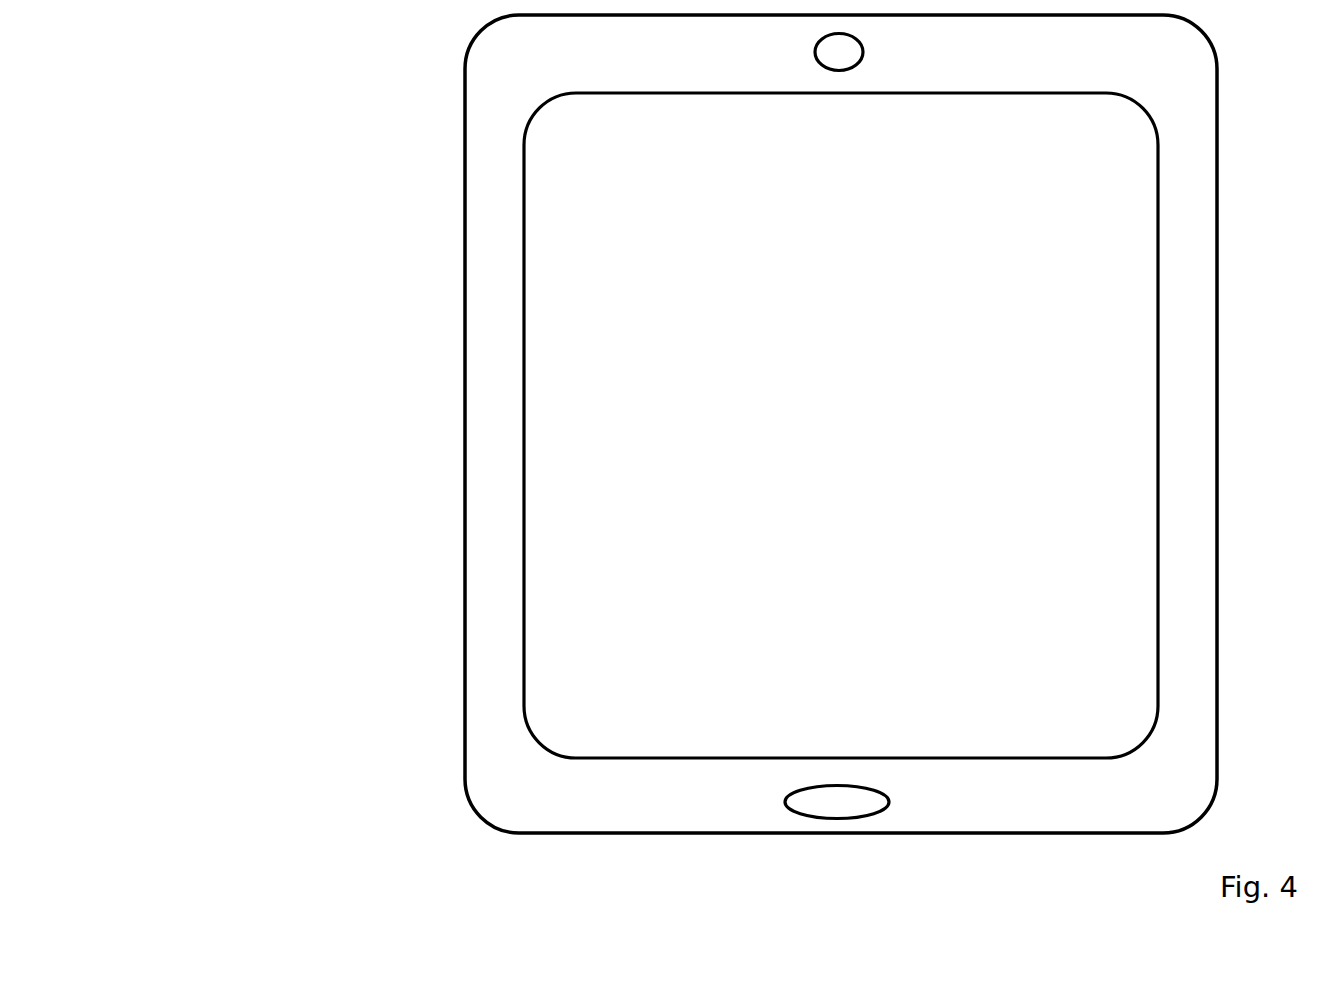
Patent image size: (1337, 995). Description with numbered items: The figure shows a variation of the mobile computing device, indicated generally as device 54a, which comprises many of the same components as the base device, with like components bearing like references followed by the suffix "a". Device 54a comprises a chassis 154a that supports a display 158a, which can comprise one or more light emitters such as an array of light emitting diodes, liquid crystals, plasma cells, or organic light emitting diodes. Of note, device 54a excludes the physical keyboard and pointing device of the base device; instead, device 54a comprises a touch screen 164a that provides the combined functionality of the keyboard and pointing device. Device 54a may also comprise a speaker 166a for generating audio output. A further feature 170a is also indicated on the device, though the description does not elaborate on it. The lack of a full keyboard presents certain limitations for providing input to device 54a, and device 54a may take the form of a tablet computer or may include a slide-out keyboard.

The device 54a is at (266, 758).
The chassis 154a is at (450, 391).
The display 158a is at (532, 257).
The touch screen 164a is at (654, 470).
The speaker 166a is at (805, 47).
The bezel region 170a is at (656, 798).